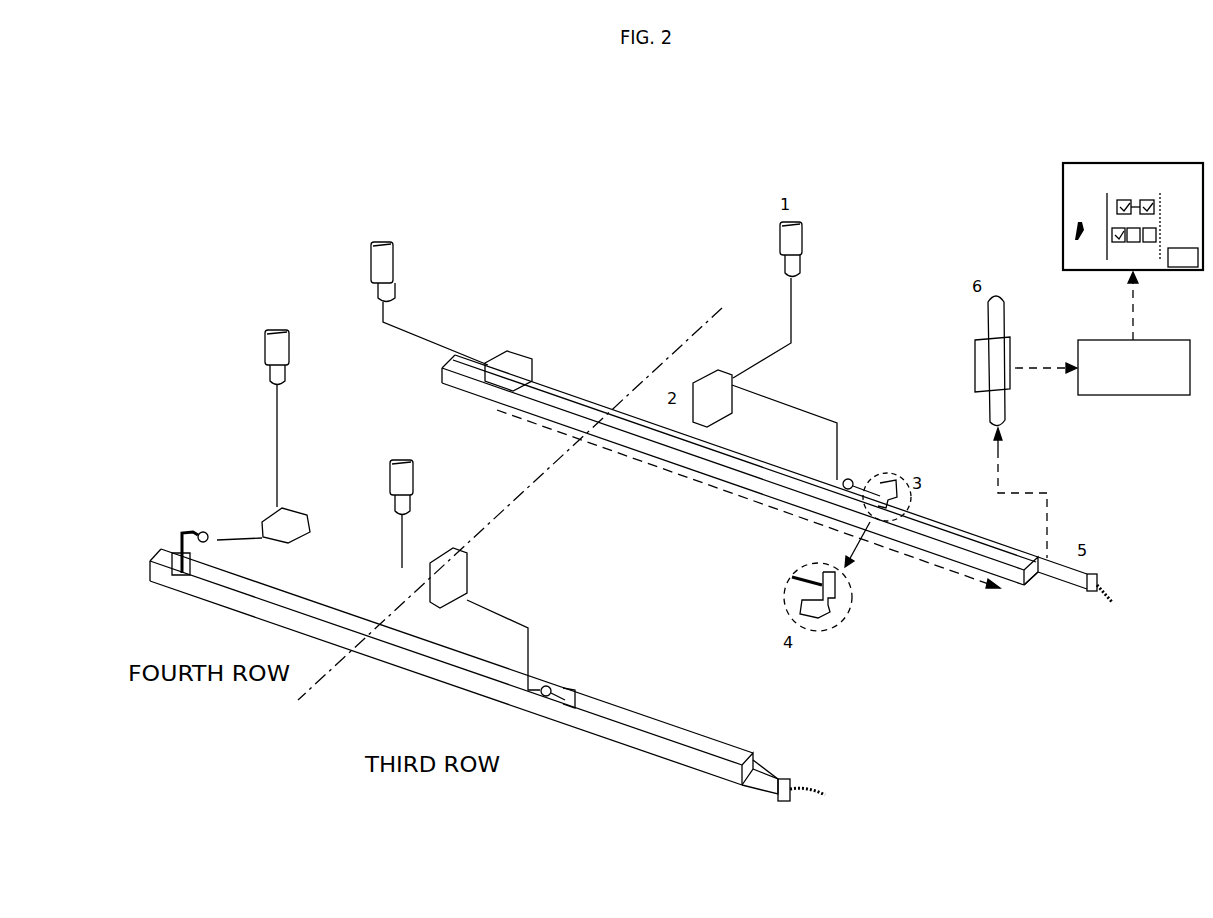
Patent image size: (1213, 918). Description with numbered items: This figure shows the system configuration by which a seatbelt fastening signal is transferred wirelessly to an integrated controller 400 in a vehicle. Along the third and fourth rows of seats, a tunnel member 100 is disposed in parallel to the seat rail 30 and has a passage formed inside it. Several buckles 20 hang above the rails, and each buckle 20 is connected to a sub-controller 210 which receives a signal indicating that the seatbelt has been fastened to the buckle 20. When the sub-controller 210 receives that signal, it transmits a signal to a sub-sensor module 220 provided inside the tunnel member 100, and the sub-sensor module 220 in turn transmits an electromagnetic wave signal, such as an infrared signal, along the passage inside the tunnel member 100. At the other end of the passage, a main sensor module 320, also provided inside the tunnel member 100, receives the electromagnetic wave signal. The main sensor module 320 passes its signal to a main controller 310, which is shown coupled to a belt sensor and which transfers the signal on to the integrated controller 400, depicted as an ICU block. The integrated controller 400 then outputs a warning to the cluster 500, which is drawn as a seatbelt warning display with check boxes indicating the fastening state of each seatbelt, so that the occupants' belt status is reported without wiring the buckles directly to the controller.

The buckle 20 is at (783, 238).
The sub-controller 210 is at (262, 512).
The tunnel member 100 is at (645, 705).
The seat rail 30 is at (620, 737).
The sub-sensor module 220 is at (822, 622).
The main sensor module 320 is at (1080, 585).
The main controller 310 is at (975, 350).
The integrated controller 400 is at (1133, 397).
The cluster 500 is at (1063, 200).